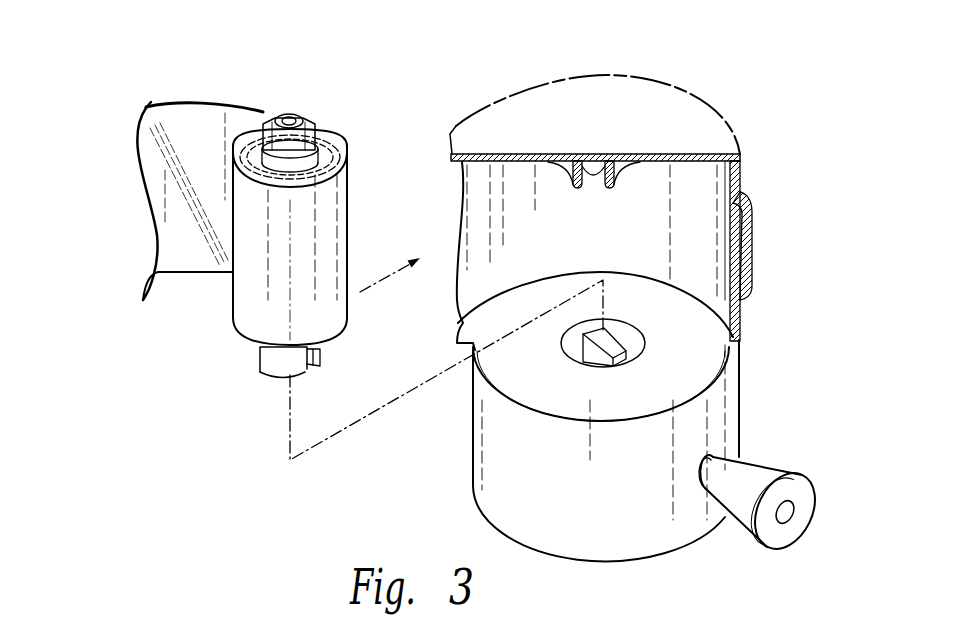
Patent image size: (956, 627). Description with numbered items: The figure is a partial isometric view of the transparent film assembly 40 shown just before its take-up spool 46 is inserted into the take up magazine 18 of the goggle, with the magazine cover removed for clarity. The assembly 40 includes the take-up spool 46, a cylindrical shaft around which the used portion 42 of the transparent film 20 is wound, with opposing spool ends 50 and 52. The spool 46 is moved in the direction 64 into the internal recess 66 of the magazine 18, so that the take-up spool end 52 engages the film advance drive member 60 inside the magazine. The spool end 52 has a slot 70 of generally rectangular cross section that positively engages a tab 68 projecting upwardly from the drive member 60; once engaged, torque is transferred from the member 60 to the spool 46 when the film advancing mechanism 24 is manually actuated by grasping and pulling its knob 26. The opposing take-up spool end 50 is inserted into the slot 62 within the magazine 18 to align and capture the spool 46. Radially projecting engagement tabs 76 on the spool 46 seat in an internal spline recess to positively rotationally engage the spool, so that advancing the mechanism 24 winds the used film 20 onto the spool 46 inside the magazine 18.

The take up magazine 18 is at (765, 120).
The transparent film 20 is at (182, 258).
The film advancing mechanism 24 is at (640, 533).
The knob 26 is at (772, 472).
The transparent film assembly 40 is at (98, 158).
The used portion of the transparent protective film 42 is at (245, 305).
The take-up spool 46 is at (287, 100).
The take-up spool end 50 is at (283, 112).
The take-up spool end 52 is at (271, 365).
The film advance drive member 60 is at (660, 335).
The slot 62 is at (598, 180).
The direction 64 is at (387, 273).
The internal recess 66 is at (594, 259).
The tab 68 is at (608, 362).
The slot 70 is at (320, 362).
The radially projecting engagement tabs 76 is at (264, 142).